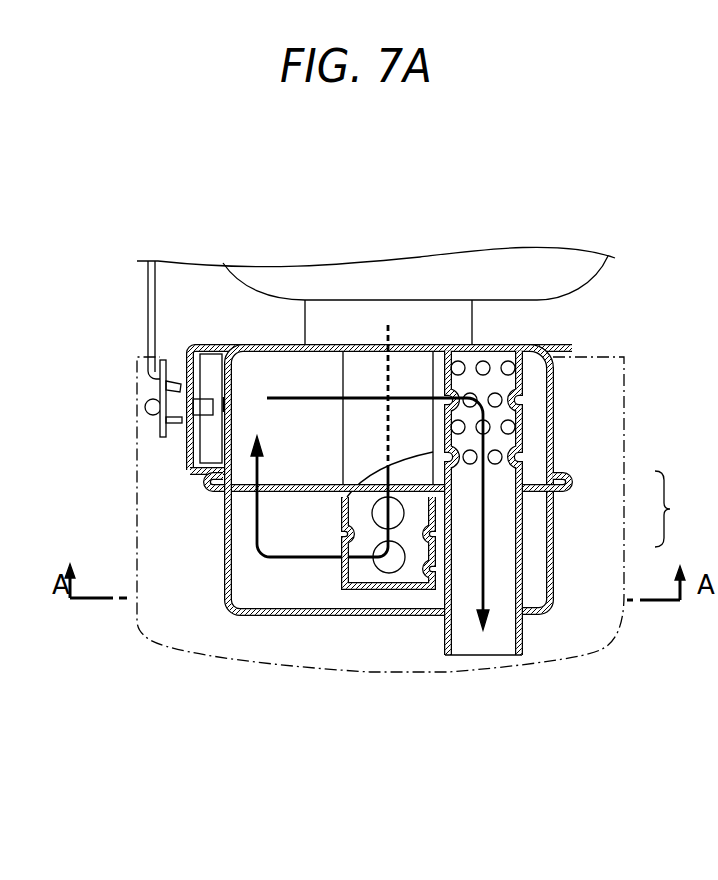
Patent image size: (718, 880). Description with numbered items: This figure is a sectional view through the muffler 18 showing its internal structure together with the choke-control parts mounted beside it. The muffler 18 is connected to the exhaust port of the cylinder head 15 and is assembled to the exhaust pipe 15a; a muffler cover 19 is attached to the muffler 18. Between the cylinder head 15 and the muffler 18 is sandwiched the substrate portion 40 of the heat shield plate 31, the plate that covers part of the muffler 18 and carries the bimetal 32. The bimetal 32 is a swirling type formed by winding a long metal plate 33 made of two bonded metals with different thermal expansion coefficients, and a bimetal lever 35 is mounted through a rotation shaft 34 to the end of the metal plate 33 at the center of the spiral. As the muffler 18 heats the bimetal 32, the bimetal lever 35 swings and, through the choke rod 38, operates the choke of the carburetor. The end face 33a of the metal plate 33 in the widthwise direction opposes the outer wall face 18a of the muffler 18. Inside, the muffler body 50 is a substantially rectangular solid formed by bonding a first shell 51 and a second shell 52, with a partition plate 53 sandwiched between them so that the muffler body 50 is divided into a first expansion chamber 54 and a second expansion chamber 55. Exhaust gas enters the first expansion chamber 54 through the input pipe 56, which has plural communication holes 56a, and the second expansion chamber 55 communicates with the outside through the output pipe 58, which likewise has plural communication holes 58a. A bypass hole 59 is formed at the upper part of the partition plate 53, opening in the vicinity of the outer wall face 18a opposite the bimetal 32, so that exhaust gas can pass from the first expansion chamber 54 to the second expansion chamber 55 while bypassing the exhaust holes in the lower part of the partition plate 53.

The cylinder head 15 is at (488, 267).
The exhaust pipe 15a is at (437, 313).
The substrate portion 40 is at (547, 344).
The heat shield plate 31 is at (565, 343).
The metal plate 33 is at (207, 357).
The end face of the metal plate 33a is at (232, 352).
The second expansion chamber 55 is at (278, 367).
The choke rod 38 is at (148, 315).
The rotation shaft 34 is at (146, 406).
The bimetal lever 35 is at (160, 437).
The outer wall face 18a is at (213, 437).
The bimetal 32 is at (192, 480).
The muffler 18 is at (218, 617).
The muffler cover 19 is at (139, 635).
The bypass hole 59 is at (250, 492).
The first expansion chamber 54 is at (298, 610).
The input pipe 56 is at (377, 604).
The communication holes 56a is at (398, 567).
The output pipe 58 is at (452, 670).
The communication holes 58a is at (519, 410).
The partition plate 53 is at (538, 500).
The second shell 52 is at (550, 455).
The first shell 51 is at (552, 535).
The muffler body 50 is at (674, 509).